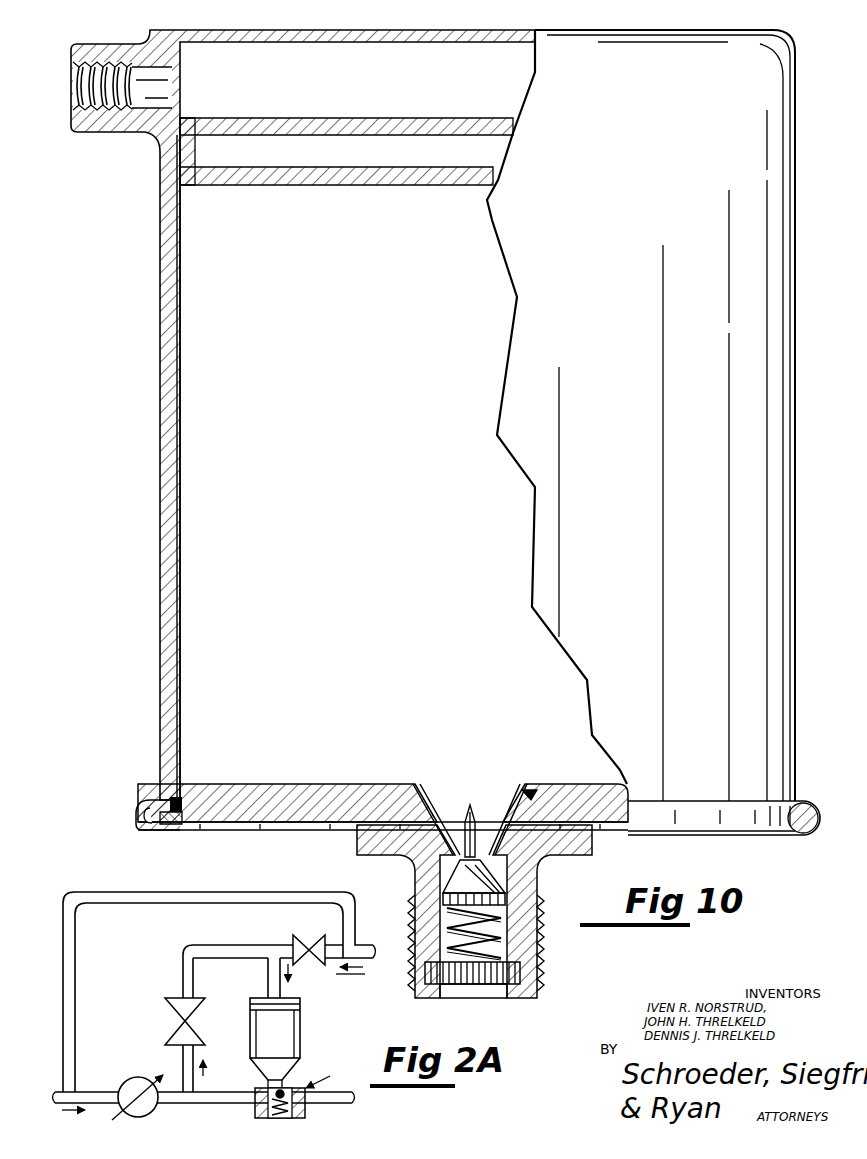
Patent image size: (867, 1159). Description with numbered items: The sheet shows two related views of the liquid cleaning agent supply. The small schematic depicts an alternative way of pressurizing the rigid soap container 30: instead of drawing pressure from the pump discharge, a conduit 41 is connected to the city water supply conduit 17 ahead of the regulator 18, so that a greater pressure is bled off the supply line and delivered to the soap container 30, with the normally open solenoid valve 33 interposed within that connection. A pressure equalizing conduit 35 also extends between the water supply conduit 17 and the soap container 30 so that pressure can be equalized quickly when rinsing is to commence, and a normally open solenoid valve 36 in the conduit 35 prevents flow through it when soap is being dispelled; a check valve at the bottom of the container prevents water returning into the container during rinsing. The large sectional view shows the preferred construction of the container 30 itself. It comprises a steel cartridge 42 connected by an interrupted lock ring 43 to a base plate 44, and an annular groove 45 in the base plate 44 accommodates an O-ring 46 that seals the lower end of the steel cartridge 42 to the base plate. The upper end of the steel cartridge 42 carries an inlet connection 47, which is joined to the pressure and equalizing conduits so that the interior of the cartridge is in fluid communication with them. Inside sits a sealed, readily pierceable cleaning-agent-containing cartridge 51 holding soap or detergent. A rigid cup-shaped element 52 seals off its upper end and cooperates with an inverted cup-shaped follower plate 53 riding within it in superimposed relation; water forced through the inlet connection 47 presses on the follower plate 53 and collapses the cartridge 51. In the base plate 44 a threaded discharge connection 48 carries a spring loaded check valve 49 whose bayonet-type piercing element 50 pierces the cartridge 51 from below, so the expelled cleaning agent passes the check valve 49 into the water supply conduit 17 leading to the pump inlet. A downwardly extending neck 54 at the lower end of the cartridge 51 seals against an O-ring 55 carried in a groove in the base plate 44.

In FIG. 2A, the water supply conduit 17 is at (93, 1092).
In FIG. 2A, the regulator 18 is at (150, 1108).
In FIG. 10, the soap container 30 is at (808, 428).
In FIG. 2A, the soap container 30 is at (284, 1046).
In FIG. 2A, the solenoid valve 33 is at (321, 966).
In FIG. 2A, the pressure equalizing conduit 35 is at (226, 945).
In FIG. 2A, the solenoid valve 36 is at (195, 1015).
In FIG. 2A, the conduit 41 is at (356, 915).
In FIG. 10, the steel cartridge 42 is at (160, 313).
In FIG. 10, the interrupted lock ring 43 is at (136, 812).
In FIG. 10, the base plate 44 is at (276, 830).
In FIG. 10, the annular groove 45 is at (178, 826).
In FIG. 10, the O-ring 46 is at (170, 800).
In FIG. 10, the inlet connection 47 is at (108, 44).
In FIG. 10, the threaded discharge connection 48 is at (415, 875).
In FIG. 10, the spring loaded check valve 49 is at (510, 882).
In FIG. 10, the bayonet-type piercing element 50 is at (466, 812).
In FIG. 10, the cleaning-agent-containing cartridge 51 is at (180, 362).
In FIG. 10, the rigid cup-shaped element 52 is at (236, 185).
In FIG. 10, the inverted cup-shaped follower plate 53 is at (305, 118).
In FIG. 10, the downwardly extending neck 54 is at (522, 805).
In FIG. 10, the O-ring 55 is at (535, 800).